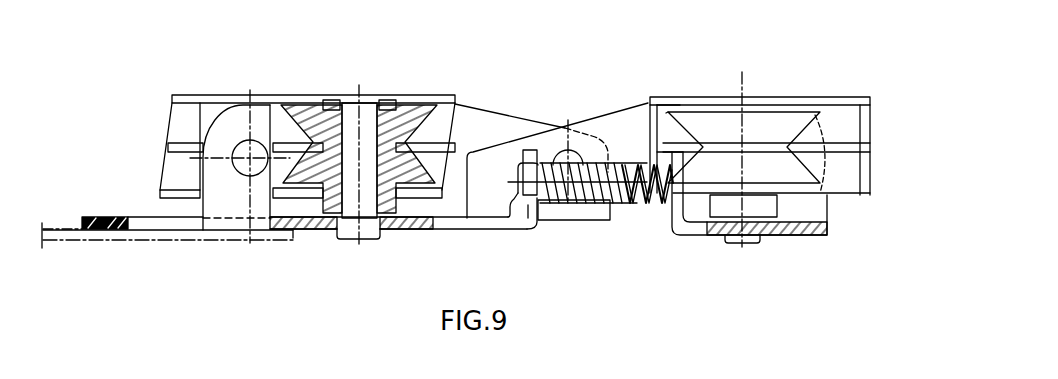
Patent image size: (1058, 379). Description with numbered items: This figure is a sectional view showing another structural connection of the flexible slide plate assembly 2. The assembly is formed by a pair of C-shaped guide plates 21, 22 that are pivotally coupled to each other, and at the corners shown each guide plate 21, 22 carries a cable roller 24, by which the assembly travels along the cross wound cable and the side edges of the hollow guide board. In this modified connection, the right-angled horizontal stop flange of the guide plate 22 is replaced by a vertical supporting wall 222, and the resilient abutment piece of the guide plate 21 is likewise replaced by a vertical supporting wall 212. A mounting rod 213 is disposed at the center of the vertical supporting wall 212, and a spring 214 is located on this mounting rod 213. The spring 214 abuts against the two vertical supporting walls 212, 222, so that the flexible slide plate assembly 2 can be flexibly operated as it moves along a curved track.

The flexible slide plate assembly 2 is at (289, 248).
The guide plate 21 is at (468, 123).
The vertical supporting wall 212 is at (532, 125).
The mounting rod 213 is at (588, 118).
The spring 214 is at (615, 162).
The guide plate 22 is at (636, 123).
The vertical supporting wall 222 is at (667, 113).
The cable roller 24 is at (403, 117).